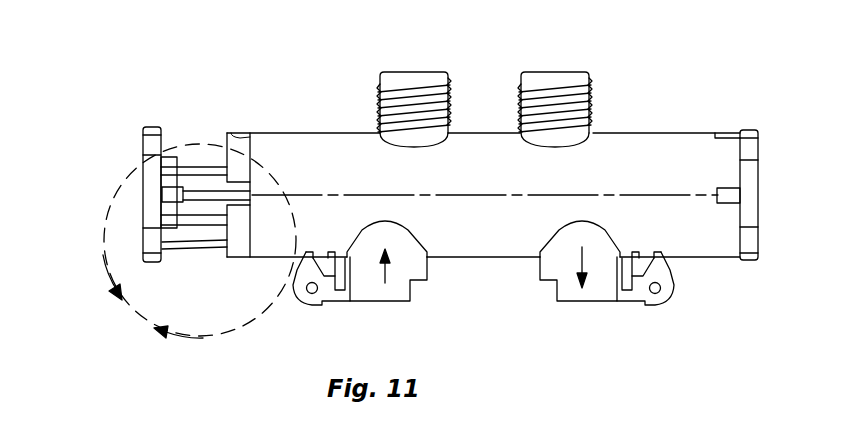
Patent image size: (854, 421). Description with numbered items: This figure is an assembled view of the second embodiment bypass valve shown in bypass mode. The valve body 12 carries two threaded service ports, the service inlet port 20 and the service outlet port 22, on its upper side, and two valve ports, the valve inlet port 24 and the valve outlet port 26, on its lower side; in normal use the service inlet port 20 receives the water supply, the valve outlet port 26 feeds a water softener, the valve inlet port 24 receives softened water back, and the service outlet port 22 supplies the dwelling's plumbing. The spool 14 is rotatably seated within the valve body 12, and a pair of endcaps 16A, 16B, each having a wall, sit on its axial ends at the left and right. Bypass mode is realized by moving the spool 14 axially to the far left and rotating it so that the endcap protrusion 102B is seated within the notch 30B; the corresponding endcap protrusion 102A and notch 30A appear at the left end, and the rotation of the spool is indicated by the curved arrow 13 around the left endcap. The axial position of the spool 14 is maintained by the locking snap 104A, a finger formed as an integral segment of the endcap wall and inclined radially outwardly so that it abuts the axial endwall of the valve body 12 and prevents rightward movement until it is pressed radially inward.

The valve body 12 is at (132, 194).
The direction of rotation 13 is at (199, 241).
The spool 14 is at (193, 157).
The endcap 16A is at (143, 250).
The endcap 16B is at (753, 262).
The service inlet port 20 is at (558, 72).
The service outlet port 22 is at (392, 72).
The valve inlet port 24 is at (366, 301).
The valve outlet port 26 is at (596, 302).
The notch 30A is at (246, 182).
The notch 30B is at (728, 203).
The endcap protrusion 102A is at (164, 195).
The endcap protrusion 102B is at (727, 186).
The locking snap 104A is at (213, 251).